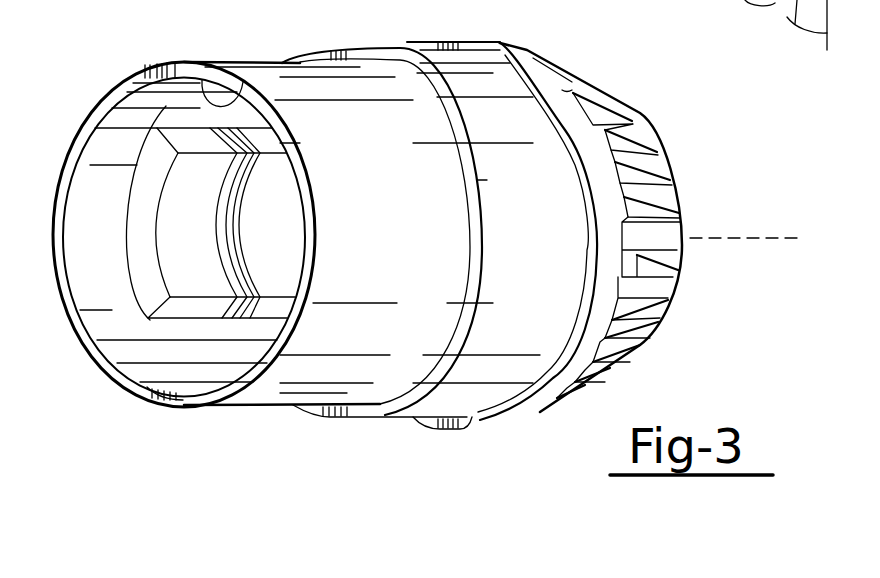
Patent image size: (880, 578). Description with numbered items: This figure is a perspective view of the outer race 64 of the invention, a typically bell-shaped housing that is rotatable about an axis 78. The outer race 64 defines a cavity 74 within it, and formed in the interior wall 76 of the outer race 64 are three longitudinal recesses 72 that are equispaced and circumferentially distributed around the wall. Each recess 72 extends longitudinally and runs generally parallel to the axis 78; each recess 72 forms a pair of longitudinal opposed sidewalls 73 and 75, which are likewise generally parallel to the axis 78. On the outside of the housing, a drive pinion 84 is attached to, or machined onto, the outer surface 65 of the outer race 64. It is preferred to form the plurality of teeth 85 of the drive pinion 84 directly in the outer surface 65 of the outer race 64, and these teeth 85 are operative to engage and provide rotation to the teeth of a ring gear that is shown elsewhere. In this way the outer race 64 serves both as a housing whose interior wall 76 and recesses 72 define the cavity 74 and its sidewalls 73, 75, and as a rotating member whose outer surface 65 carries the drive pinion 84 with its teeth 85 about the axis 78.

The outer race 64 is at (343, 378).
The outer surface 65 is at (577, 83).
The recess 72 is at (174, 117).
The sidewall 73 is at (188, 145).
The cavity 74 is at (197, 357).
The sidewall 75 is at (202, 80).
The interior wall 76 is at (172, 262).
The axis 78 is at (740, 238).
The drive pinion 84 is at (643, 135).
The teeth 85 is at (660, 152).